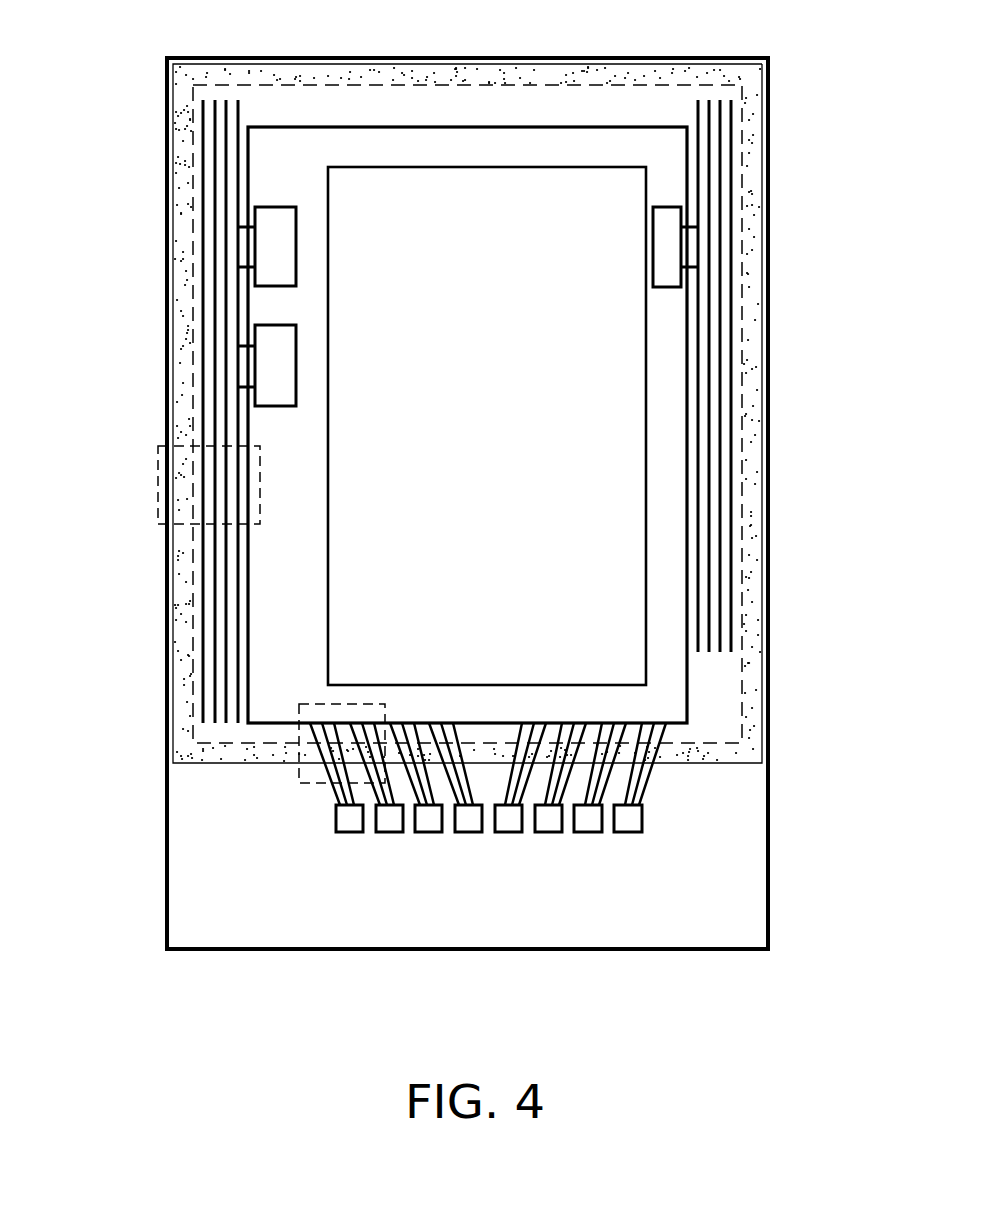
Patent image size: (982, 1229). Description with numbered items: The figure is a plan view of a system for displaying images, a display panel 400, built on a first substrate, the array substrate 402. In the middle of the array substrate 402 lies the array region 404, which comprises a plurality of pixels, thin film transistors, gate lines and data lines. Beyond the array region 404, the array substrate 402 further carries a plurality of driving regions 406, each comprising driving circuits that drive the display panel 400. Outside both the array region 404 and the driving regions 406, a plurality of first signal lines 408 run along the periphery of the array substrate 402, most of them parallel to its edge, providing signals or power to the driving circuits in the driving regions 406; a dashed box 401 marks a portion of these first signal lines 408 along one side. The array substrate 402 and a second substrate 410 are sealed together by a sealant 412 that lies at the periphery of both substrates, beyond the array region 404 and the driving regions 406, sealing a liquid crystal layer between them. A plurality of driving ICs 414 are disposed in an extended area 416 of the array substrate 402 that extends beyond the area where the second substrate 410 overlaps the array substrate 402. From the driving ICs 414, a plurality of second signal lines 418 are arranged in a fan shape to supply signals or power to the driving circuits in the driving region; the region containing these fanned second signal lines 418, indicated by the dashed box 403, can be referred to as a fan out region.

The display panel 400 is at (150, 78).
The side region of signal lines 401 is at (158, 483).
The array substrate 402 is at (733, 783).
The fan-out region 403 is at (300, 733).
The array region 404 is at (648, 502).
The driving regions 406 is at (272, 249).
The first signal lines 408 is at (203, 500).
The second substrate 410 is at (762, 605).
The sealant 412 is at (710, 745).
The driving ICs 414 is at (631, 817).
The extended area 416 is at (735, 905).
The second signal lines 418 is at (375, 776).